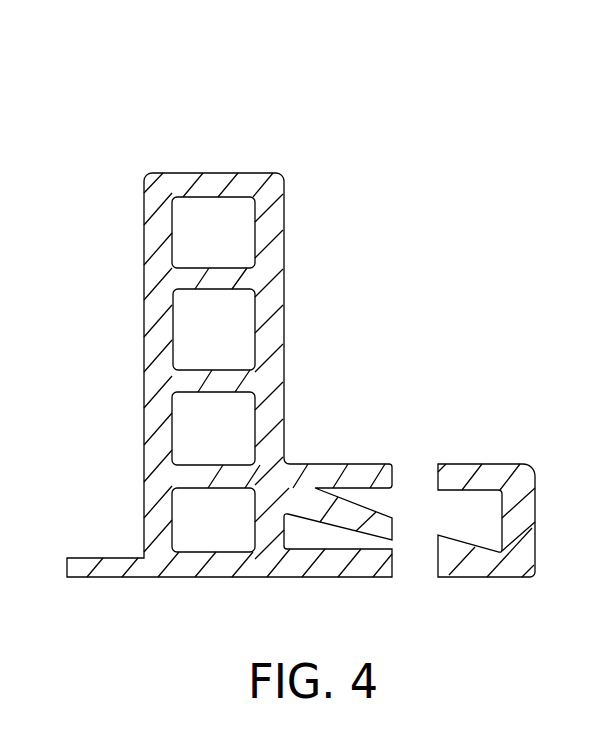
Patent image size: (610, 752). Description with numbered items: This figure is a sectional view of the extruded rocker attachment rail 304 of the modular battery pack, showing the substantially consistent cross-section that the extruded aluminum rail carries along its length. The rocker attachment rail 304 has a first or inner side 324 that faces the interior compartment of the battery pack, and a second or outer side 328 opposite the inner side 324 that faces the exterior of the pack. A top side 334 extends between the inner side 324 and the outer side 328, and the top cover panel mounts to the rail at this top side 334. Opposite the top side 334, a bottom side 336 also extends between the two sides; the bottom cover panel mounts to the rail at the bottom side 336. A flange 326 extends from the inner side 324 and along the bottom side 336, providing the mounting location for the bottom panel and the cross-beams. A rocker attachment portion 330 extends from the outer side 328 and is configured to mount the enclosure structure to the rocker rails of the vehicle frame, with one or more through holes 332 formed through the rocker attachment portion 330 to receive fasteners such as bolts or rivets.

The rocker attachment rail 304 is at (153, 158).
The inner side 324 is at (145, 268).
The outer side 328 is at (283, 255).
The top side 334 is at (258, 172).
The flange 326 is at (90, 557).
The through holes 332 is at (405, 477).
The bottom side 336 is at (138, 577).
The rocker attachment portion 330 is at (493, 463).